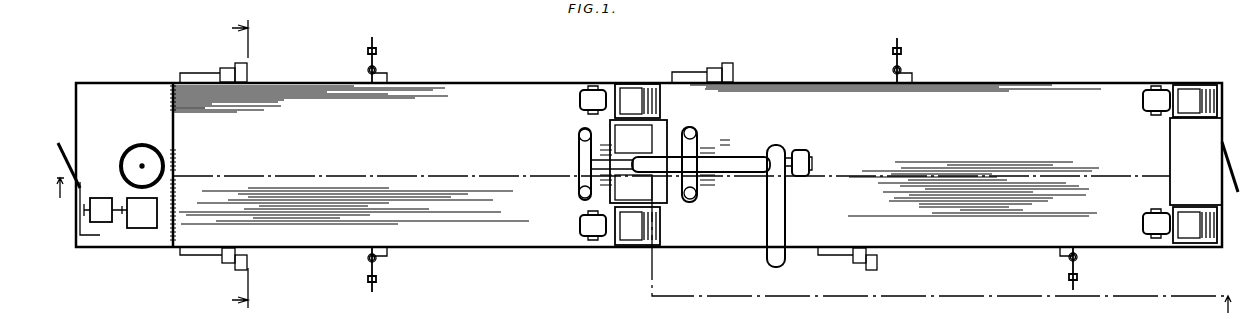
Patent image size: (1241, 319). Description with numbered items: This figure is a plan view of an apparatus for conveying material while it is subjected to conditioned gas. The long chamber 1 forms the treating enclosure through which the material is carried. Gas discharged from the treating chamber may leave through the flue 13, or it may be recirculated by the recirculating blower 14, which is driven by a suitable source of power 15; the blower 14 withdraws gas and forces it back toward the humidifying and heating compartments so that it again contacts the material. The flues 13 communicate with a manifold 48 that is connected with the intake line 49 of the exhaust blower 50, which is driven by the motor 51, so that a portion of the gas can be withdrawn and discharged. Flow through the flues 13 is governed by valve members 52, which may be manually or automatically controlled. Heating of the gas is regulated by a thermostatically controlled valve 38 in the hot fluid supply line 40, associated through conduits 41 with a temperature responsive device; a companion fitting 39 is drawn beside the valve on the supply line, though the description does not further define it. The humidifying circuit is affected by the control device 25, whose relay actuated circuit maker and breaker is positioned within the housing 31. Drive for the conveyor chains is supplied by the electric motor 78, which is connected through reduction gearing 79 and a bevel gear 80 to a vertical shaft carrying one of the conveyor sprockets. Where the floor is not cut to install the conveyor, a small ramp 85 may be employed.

The chamber 1 is at (478, 81).
The flue 13 is at (578, 133).
The recirculating blower 14 is at (636, 90).
The source of power 15 is at (578, 100).
The control device 25 is at (248, 77).
The housing 31 is at (248, 66).
The thermostatically controlled valve 38 is at (893, 72).
The adjusting nut 39 is at (368, 72).
The hot fluid supply line 40 is at (374, 43).
The conduit 41 is at (388, 74).
The manifold 48 is at (630, 158).
The intake line 49 is at (745, 157).
The blower 50 is at (770, 180).
The motor 51 is at (811, 176).
The valve member 52 is at (572, 139).
The electric motor 78 is at (98, 230).
The reduction gearing 79 is at (144, 230).
The bevel gear 80 is at (126, 153).
The ramp 85 is at (1222, 162).